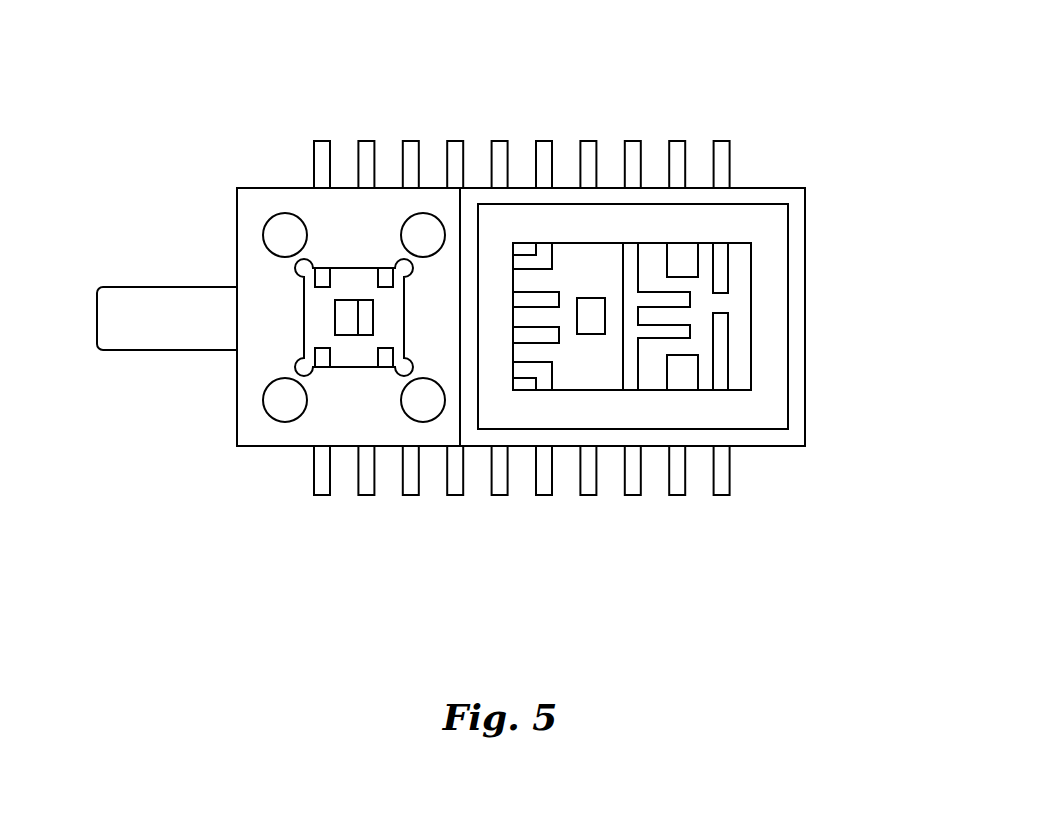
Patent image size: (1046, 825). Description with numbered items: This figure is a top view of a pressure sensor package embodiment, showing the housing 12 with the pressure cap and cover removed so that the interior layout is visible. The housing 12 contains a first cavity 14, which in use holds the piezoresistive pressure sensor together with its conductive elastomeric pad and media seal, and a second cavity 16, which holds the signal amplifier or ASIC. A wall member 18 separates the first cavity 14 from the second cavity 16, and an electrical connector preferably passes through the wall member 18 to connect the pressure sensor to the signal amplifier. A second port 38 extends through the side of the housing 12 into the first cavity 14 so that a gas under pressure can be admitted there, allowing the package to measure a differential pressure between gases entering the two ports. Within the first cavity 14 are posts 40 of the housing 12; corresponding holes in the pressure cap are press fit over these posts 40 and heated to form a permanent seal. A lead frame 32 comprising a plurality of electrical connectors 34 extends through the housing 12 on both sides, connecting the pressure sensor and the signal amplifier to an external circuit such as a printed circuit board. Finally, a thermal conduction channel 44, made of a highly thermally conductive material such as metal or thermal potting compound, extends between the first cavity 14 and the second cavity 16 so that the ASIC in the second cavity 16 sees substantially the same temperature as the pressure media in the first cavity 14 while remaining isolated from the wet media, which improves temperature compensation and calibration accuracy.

The housing 12 is at (805, 373).
The first cavity 14 is at (325, 312).
The second cavity 16 is at (740, 308).
The wall member 18 is at (430, 317).
The lead frame 32 is at (315, 495).
The electrical connectors 34 is at (587, 487).
The second port 38 is at (158, 327).
The posts 40 is at (285, 401).
The thermal conduction channel 44 is at (592, 320).